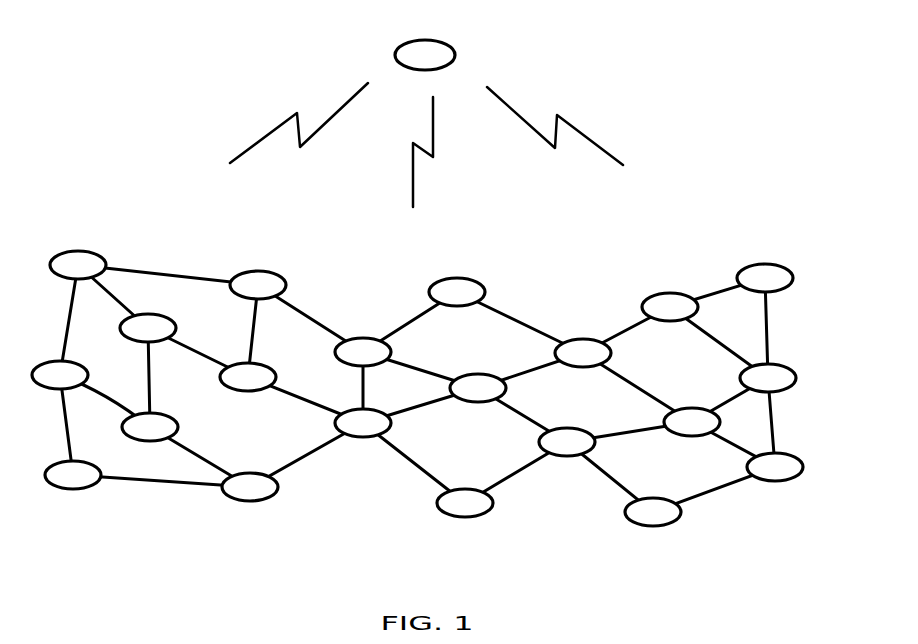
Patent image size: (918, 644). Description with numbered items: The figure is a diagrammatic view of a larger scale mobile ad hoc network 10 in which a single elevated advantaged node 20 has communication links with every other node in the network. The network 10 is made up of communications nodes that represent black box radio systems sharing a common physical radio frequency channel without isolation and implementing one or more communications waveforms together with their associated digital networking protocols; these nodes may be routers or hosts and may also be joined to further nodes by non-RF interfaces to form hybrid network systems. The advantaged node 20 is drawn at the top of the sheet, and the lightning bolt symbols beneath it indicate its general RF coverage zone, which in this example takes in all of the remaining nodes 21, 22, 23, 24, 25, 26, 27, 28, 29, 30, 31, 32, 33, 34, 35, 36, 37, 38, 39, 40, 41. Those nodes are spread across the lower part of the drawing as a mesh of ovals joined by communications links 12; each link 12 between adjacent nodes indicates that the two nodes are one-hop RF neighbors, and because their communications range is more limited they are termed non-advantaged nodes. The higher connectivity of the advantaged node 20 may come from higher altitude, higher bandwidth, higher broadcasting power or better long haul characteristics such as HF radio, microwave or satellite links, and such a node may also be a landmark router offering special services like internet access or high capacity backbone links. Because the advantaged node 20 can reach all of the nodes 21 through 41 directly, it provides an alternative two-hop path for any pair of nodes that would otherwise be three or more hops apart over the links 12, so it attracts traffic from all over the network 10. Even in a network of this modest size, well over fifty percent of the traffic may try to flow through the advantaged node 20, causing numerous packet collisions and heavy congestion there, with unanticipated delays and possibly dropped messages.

The network 10 is at (566, 228).
The communications links 12 is at (196, 353).
The advantaged node 20 is at (450, 47).
The communications node 21 is at (78, 250).
The communications node 22 is at (40, 366).
The communications node 23 is at (151, 313).
The communications node 24 is at (259, 270).
The communications node 25 is at (182, 425).
The communications node 26 is at (75, 490).
The communications node 27 is at (255, 503).
The communications node 28 is at (268, 368).
The communications node 29 is at (362, 338).
The communications node 30 is at (365, 440).
The communications node 31 is at (461, 277).
The communications node 32 is at (478, 373).
The communications node 33 is at (468, 518).
The communications node 34 is at (565, 458).
The communications node 35 is at (583, 338).
The communications node 36 is at (658, 527).
The communications node 37 is at (692, 408).
The communications node 38 is at (670, 292).
The communications node 39 is at (766, 263).
The communications node 40 is at (790, 370).
The communications node 41 is at (777, 482).